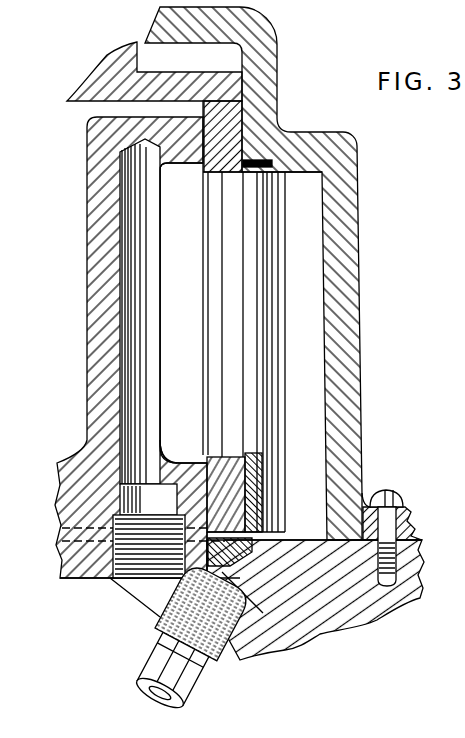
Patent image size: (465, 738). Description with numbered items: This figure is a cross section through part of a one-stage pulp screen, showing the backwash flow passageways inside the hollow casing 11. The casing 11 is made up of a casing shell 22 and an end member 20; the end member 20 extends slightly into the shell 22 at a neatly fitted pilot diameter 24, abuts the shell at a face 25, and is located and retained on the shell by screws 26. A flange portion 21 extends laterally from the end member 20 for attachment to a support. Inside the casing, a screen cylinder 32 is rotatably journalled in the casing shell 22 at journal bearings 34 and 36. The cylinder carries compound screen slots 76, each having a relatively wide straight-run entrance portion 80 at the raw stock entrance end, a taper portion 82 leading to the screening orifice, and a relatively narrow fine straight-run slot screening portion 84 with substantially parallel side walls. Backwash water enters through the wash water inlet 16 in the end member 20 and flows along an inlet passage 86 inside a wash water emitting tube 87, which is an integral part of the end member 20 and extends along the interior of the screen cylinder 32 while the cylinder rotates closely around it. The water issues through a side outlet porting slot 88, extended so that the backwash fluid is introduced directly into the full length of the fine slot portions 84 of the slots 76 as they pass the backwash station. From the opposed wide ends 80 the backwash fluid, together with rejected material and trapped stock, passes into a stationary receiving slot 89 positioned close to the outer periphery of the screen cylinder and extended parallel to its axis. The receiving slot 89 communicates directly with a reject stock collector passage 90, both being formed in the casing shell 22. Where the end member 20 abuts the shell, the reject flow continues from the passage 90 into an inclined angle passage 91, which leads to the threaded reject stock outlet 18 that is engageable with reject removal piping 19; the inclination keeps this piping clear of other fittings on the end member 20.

The hollow casing 11 is at (285, 125).
The journal bearing 34 is at (243, 118).
The wash water emitting tube 87 is at (88, 322).
The side outlet porting slot 88 is at (120, 352).
The wash water inlet 16 is at (118, 587).
The end member 20 is at (77, 580).
The slot screening portion 84 is at (203, 253).
The inlet passage 86 is at (157, 452).
The taper portion 82 is at (215, 220).
The entrance portion 80 is at (233, 196).
The compound screen slots 76 is at (233, 283).
The receiving slot 89 is at (258, 230).
The reject stock collector passage 90 is at (310, 313).
The screen cylinder 32 is at (212, 455).
The journal bearing 36 is at (247, 502).
The flange portion 21 is at (425, 568).
The pilot diameter 24 is at (260, 552).
The face 25 is at (360, 547).
The angle passage 91 is at (288, 575).
The casing shell 22 is at (421, 519).
The screws 26 is at (394, 493).
The reject stock outlet 18 is at (170, 627).
The external piping 19 is at (195, 694).